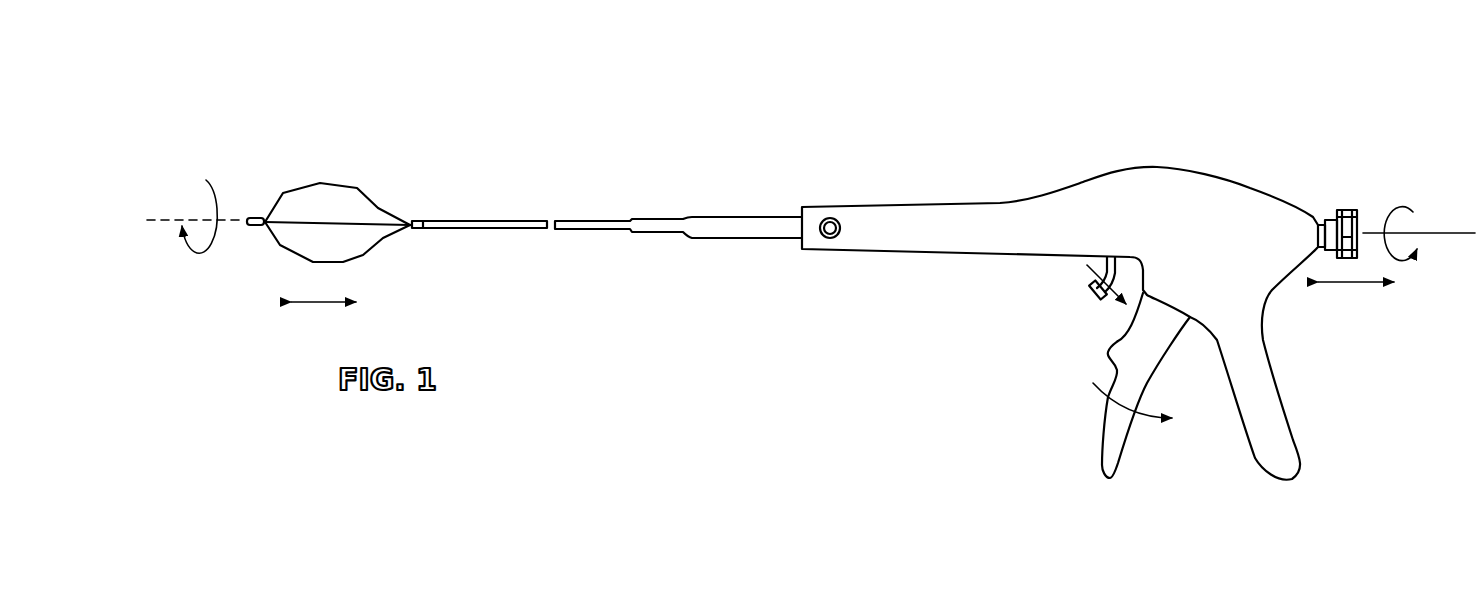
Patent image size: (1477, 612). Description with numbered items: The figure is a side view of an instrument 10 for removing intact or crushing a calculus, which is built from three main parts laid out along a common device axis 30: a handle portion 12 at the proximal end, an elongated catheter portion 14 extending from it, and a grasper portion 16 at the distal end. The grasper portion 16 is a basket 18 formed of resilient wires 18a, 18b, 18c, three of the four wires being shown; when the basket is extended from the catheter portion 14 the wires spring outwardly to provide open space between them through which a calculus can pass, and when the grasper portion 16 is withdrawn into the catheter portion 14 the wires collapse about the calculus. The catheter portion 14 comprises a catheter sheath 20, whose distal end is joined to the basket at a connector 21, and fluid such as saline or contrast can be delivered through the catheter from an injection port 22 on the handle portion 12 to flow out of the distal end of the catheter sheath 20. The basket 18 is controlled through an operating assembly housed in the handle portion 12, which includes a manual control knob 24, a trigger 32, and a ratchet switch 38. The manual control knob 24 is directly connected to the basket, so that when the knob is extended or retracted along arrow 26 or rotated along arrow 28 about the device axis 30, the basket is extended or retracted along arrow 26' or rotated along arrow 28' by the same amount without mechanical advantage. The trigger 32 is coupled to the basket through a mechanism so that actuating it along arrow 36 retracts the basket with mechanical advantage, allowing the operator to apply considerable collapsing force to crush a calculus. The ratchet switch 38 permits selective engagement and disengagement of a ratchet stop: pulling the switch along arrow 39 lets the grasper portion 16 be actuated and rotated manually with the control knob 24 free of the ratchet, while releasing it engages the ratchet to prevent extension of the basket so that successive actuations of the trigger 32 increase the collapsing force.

The instrument 10 is at (1368, 456).
The handle portion 12 is at (872, 87).
The catheter portion 14 is at (412, 82).
The grasper portion 16 is at (254, 165).
The basket 18 is at (380, 186).
The resilient wire 18a is at (299, 188).
The resilient wire 18b is at (297, 223).
The resilient wire 18c is at (287, 253).
The catheter sheath 20 is at (515, 229).
The distal connector 21 is at (428, 229).
The injection port 22 is at (823, 218).
The manual control knob 24 is at (1342, 210).
The arrow indicating extension and retraction of control knob 26 is at (1356, 299).
The arrow indicating extension and retraction of basket 26' is at (323, 317).
The arrow indicating rotation of control knob 28 is at (1398, 215).
The arrow indicating rotation of basket 28' is at (187, 208).
The device axis 30 is at (151, 221).
The trigger 32 is at (1102, 450).
The arrow indicating trigger actuation 36 is at (1095, 383).
The ratchet switch 38 is at (1090, 287).
The arrow indicating pulling of ratchet switch 39 is at (1110, 293).